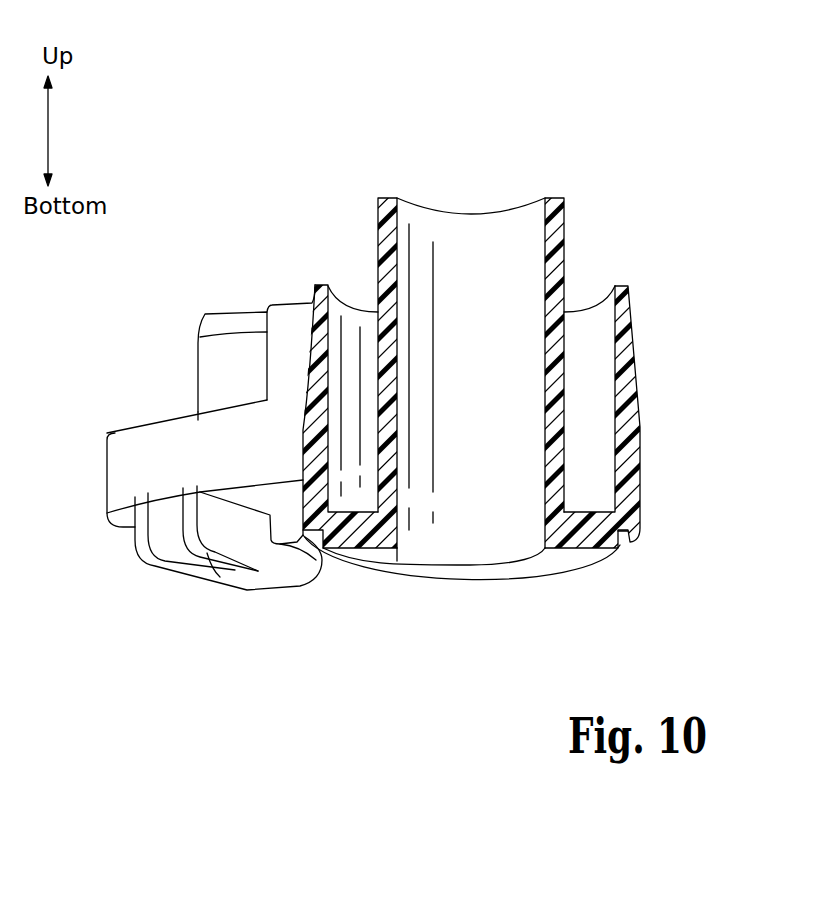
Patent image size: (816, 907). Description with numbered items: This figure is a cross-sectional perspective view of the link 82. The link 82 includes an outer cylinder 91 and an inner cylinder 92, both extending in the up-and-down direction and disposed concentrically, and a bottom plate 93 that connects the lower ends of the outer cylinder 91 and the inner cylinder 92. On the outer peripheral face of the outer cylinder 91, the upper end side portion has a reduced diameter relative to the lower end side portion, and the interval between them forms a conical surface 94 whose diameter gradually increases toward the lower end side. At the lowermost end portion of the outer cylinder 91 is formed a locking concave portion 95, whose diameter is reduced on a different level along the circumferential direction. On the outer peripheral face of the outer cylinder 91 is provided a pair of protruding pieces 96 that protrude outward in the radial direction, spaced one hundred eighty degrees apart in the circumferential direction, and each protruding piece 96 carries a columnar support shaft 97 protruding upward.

The link 82 is at (615, 228).
The outer cylinder 91 is at (637, 452).
The inner cylinder 92 is at (557, 199).
The bottom plate 93 is at (585, 542).
The conical surface 94 is at (637, 380).
The locking concave portion 95 is at (622, 536).
The protruding piece 96 is at (117, 460).
The support shaft 97 is at (207, 371).